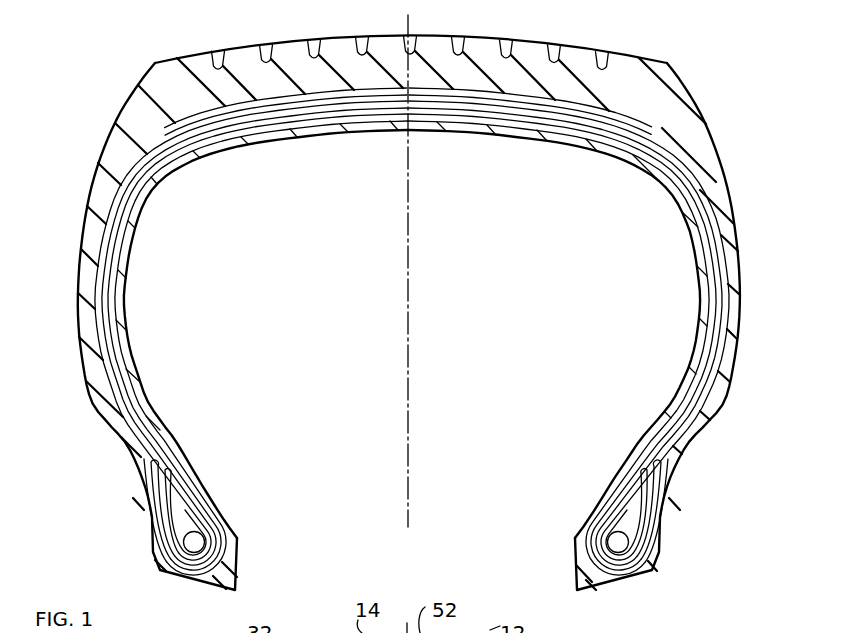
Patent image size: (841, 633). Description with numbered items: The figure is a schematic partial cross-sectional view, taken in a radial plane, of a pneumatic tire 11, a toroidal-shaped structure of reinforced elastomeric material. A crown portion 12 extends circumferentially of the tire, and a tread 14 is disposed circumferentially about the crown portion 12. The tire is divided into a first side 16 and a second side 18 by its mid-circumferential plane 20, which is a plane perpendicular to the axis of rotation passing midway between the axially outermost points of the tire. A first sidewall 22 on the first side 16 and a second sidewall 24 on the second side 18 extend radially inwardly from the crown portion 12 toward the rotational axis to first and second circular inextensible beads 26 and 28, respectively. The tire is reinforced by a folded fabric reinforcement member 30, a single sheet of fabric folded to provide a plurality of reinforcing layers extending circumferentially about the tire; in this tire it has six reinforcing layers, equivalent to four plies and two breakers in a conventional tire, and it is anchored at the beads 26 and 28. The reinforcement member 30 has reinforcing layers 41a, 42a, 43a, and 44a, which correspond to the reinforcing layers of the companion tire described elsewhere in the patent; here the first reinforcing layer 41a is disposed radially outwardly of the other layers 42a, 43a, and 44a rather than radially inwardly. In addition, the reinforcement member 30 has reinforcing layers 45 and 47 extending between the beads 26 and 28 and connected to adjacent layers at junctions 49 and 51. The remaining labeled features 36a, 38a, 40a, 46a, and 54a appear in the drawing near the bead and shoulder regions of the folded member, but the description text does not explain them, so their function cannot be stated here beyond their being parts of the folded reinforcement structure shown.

The tire 11 is at (718, 82).
The crown portion 12 is at (520, 70).
The tread 14 is at (318, 46).
The first side 16 is at (747, 266).
The second side 18 is at (79, 277).
The mid-circumferential plane 20 is at (412, 320).
The first sidewall 22 is at (740, 352).
The second sidewall 24 is at (80, 353).
The first bead 26 is at (620, 544).
The second bead 28 is at (192, 543).
The folded fabric reinforcement member 30 is at (463, 83).
The ply turn-up 36a is at (667, 485).
The ply turn-up 38a is at (150, 485).
The ply turn-up end 40a is at (145, 458).
The first reinforcing layer 41a is at (687, 157).
The reinforcing layer 42a is at (613, 123).
The reinforcing layer 43a is at (580, 117).
The reinforcing layer 44a is at (517, 113).
The reinforcing layer 45 is at (660, 168).
The belt ply 46a is at (676, 150).
The reinforcing layer 47 is at (690, 217).
The junction 49 is at (683, 451).
The junction 51 is at (140, 464).
The ply 54a is at (171, 146).